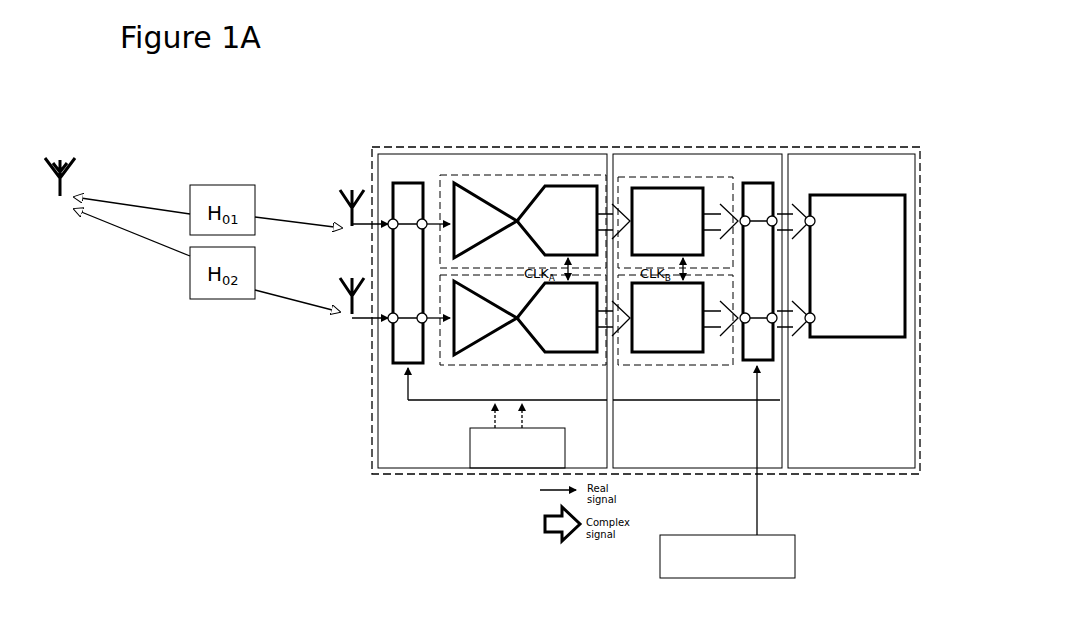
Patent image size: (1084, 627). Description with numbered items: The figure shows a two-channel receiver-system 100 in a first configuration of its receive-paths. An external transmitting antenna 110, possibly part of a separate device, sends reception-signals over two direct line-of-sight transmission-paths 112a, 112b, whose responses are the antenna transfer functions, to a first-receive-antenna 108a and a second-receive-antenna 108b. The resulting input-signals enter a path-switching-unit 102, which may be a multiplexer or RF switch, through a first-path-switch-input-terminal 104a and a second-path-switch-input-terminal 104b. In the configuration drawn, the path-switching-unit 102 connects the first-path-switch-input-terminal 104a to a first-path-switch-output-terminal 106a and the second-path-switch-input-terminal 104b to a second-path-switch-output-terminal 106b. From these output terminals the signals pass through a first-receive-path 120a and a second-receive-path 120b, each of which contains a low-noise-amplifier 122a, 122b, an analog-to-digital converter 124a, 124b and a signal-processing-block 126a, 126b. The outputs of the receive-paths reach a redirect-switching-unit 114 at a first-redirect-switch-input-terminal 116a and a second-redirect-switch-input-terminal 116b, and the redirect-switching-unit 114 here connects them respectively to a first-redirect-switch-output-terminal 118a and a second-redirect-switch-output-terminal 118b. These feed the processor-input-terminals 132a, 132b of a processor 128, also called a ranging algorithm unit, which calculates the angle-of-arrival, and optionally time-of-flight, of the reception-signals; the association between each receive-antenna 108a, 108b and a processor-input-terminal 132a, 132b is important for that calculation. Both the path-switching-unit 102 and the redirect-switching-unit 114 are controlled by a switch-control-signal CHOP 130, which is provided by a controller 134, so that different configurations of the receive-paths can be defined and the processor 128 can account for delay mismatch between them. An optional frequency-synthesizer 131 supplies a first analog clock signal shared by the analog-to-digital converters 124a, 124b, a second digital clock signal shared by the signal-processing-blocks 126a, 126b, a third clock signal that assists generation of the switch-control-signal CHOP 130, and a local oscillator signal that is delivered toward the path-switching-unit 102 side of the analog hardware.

The receiver-system 100 is at (872, 477).
The path-switching-unit 102 is at (407, 180).
The first-path-switch-input-terminal 104a is at (392, 219).
The second-path-switch-input-terminal 104b is at (390, 323).
The first-path-switch-output-terminal 106a is at (426, 220).
The second-path-switch-output-terminal 106b is at (420, 323).
The first-receive-antenna 108a is at (344, 220).
The second-receive-antenna 108b is at (348, 318).
The external transmitting antenna 110 is at (78, 166).
The first transmission-path 112a is at (144, 205).
The second transmission-path 112b is at (134, 258).
The redirect-switching-unit 114 is at (776, 357).
The first-redirect-switch-input-terminal 116a is at (748, 216).
The second-redirect-switch-input-terminal 116b is at (746, 324).
The first-redirect-switch-output-terminal 118a is at (776, 217).
The second-redirect-switch-output-terminal 118b is at (776, 322).
The first-receive-path 120a is at (600, 175).
The second-receive-path 120b is at (513, 362).
The low-noise-amplifier 122a is at (490, 203).
The low-noise-amplifier 122b is at (474, 341).
The analog-to-digital converter 124a is at (546, 188).
The analog-to-digital converter 124b is at (563, 356).
The signal-processing-block 126a is at (703, 187).
The signal-processing-block 126b is at (666, 355).
The processor 128 is at (906, 237).
The switch-control-signal CHOP 130 is at (730, 402).
The frequency-synthesizer 131 is at (470, 448).
The first processor-input-terminal 132a is at (813, 217).
The second processor-input-terminal 132b is at (814, 321).
The controller 134 is at (796, 556).